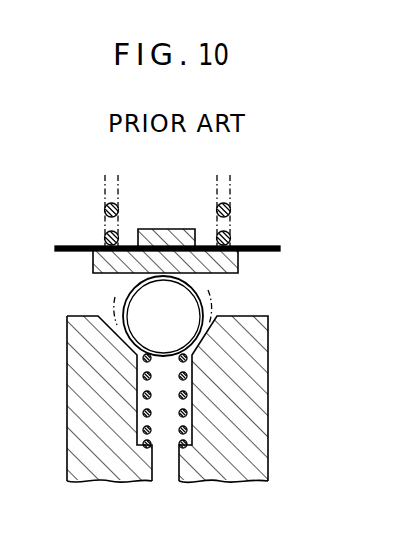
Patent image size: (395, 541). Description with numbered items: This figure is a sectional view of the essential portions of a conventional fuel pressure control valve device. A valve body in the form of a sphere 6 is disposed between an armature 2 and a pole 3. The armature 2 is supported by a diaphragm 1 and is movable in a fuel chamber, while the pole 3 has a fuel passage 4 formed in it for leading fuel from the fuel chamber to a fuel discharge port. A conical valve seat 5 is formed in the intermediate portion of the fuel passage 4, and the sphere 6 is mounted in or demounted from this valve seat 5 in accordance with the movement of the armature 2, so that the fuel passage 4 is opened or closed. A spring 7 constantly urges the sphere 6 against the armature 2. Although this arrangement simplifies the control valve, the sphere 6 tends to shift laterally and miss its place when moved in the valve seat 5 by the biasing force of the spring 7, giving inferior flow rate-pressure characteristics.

The diaphragm 1 is at (259, 246).
The armature 2 is at (238, 265).
The pole 3 is at (268, 380).
The fuel passage 4 is at (163, 473).
The valve seat 5 is at (118, 328).
The sphere 6 is at (195, 284).
The spring 7 is at (143, 395).